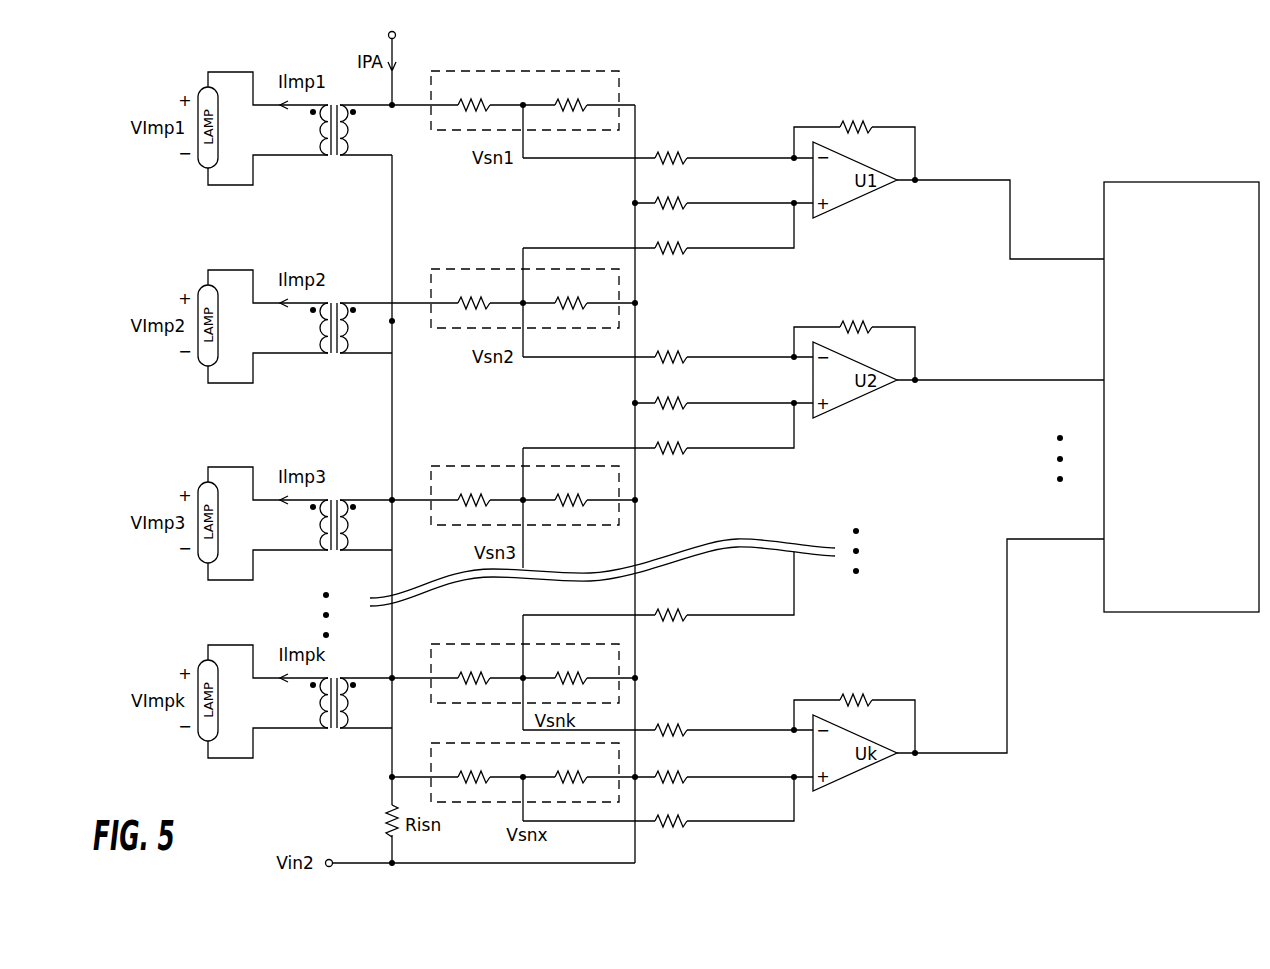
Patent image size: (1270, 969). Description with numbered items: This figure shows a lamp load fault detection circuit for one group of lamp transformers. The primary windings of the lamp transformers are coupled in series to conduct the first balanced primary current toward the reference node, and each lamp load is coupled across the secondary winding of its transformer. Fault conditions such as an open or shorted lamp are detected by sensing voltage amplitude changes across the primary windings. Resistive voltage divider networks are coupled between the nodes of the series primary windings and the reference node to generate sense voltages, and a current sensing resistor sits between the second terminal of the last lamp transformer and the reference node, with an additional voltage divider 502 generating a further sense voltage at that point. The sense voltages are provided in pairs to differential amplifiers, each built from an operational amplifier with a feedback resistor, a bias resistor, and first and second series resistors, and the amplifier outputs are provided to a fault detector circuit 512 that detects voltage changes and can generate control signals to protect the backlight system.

The additional voltage divider 502 is at (510, 743).
The fault detector circuit 512 is at (1182, 182).